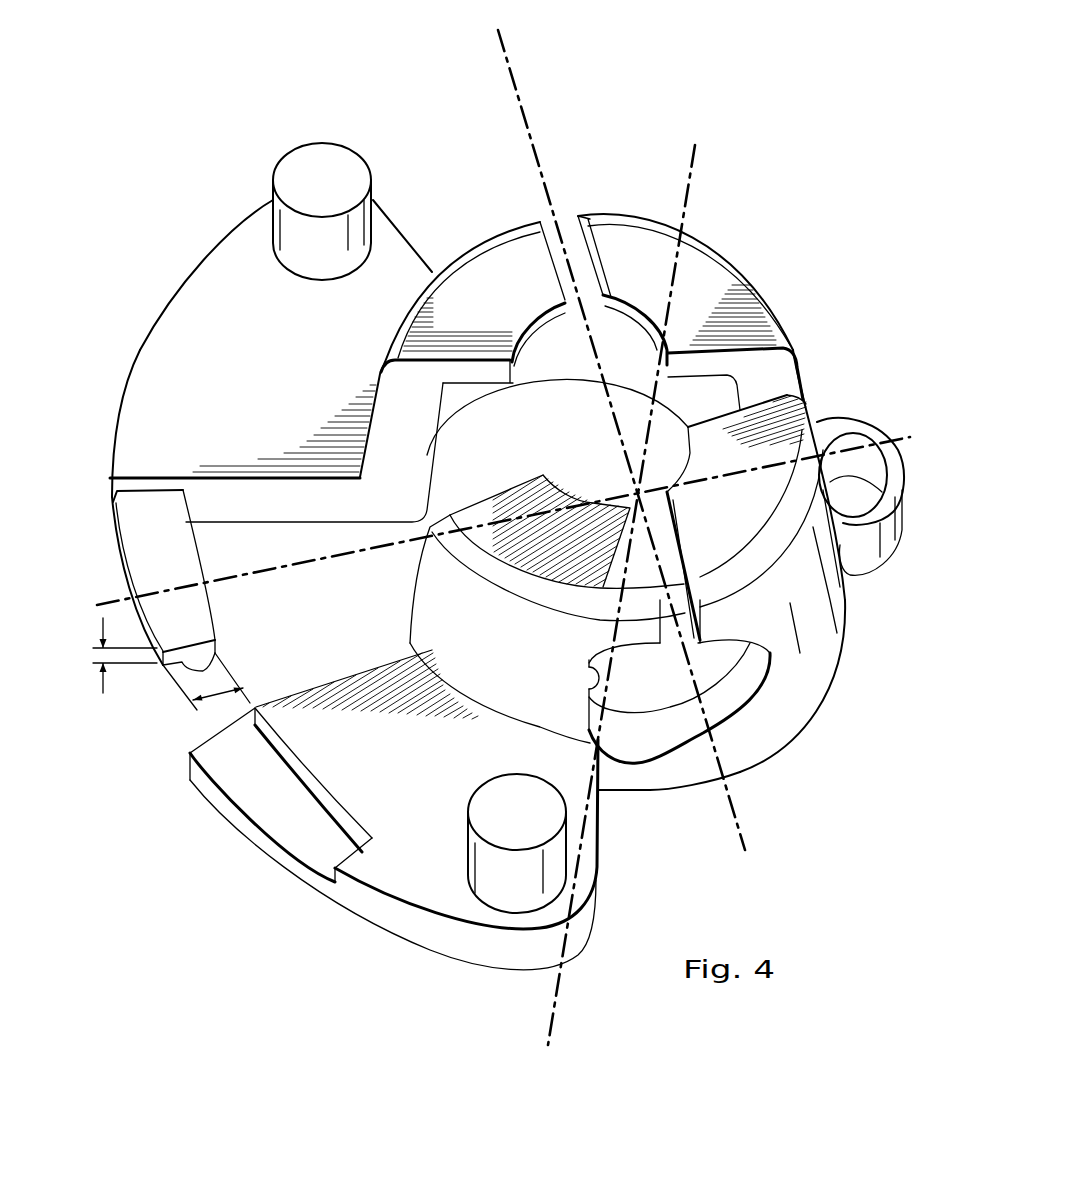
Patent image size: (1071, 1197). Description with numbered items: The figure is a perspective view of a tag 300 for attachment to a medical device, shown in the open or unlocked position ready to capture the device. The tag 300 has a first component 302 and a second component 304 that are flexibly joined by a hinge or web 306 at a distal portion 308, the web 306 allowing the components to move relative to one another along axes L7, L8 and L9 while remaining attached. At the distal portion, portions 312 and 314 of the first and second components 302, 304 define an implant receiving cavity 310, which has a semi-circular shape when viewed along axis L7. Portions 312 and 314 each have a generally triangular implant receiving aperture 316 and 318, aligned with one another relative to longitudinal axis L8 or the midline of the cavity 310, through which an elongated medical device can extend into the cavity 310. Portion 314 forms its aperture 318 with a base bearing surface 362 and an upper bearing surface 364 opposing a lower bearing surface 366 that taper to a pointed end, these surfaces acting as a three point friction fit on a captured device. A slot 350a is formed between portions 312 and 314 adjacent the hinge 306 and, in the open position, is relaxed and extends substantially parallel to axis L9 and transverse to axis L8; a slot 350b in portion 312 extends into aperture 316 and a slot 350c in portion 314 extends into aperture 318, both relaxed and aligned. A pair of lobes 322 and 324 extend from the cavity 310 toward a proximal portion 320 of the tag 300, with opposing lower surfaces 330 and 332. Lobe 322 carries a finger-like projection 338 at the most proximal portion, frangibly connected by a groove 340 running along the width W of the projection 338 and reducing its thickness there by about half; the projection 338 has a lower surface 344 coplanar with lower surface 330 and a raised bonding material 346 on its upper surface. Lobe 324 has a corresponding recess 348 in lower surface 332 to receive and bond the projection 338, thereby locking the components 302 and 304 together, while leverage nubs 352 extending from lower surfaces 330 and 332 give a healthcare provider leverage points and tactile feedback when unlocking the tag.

The tag 300 is at (773, 127).
The first component 302 is at (487, 226).
The second component 304 is at (804, 734).
The hinge or web 306 is at (900, 413).
The distal portion 308 is at (840, 603).
The implant receiving cavity 310 is at (605, 468).
The portion 312 is at (710, 247).
The portion 314 is at (827, 687).
The implant receiving aperture 316 is at (542, 379).
The implant receiving aperture 318 is at (655, 771).
The proximal portion 320 is at (133, 358).
The lobe 322 is at (172, 293).
The lobe 324 is at (406, 954).
The lower surface 330 is at (227, 256).
The lower surface 332 is at (370, 670).
The finger-like projection 338 is at (210, 613).
The groove 340 is at (113, 477).
The lower surface 344 is at (180, 560).
The raised bonding material 346 is at (218, 668).
The recess 348 is at (283, 802).
The slot 350a is at (783, 380).
The slot 350b is at (565, 230).
The slot 350c is at (664, 540).
The leverage nubs 352 is at (313, 142).
The base bearing surface 362 is at (590, 677).
The upper bearing surface 364 is at (635, 643).
The lower bearing surface 366 is at (721, 703).
The axis L7 is at (698, 126).
The longitudinal axis L8 is at (746, 863).
The longitudinal axis L9 is at (76, 611).
The thickness dimension T is at (125, 671).
The width W is at (206, 689).